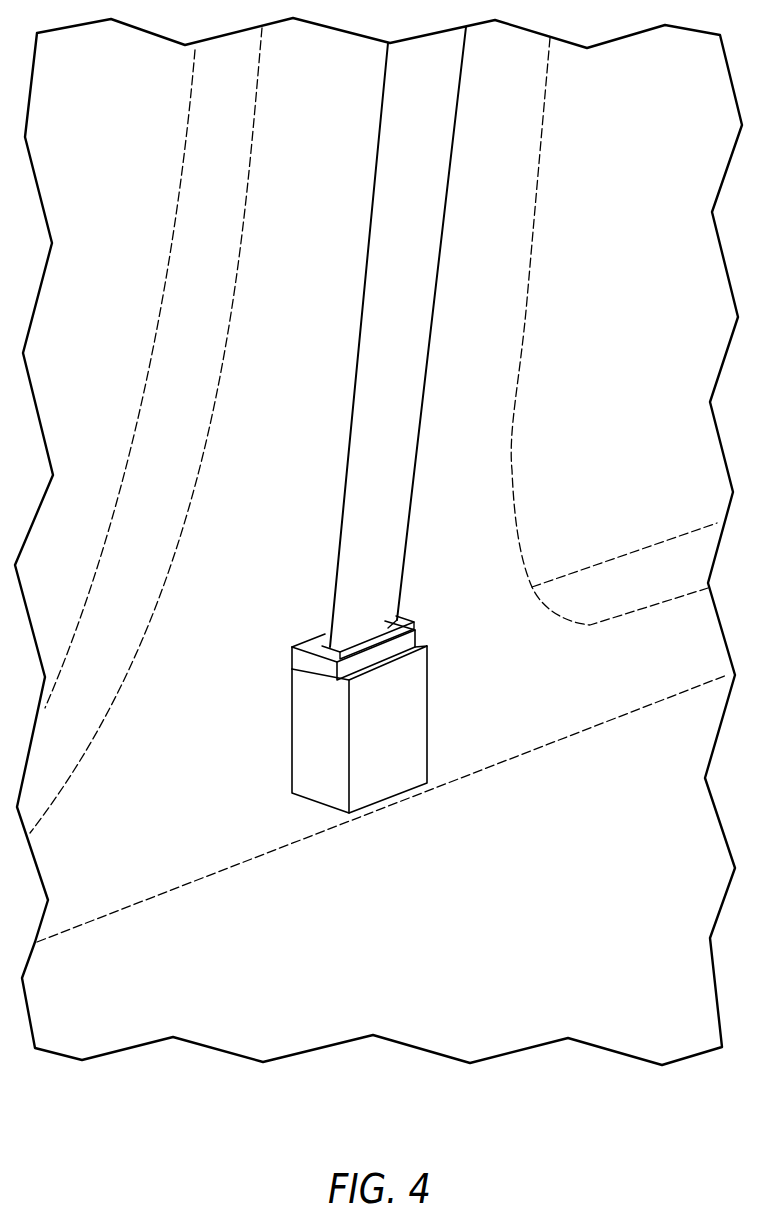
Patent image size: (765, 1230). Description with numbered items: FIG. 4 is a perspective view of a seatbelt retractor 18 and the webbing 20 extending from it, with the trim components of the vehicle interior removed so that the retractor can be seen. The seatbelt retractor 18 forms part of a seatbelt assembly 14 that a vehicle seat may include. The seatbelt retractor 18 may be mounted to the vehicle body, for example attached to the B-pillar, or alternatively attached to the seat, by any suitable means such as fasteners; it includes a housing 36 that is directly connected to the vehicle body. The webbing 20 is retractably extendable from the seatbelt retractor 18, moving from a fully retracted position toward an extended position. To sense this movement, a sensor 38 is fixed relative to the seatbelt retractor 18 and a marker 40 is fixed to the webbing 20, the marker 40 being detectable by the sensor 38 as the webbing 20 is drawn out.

The seatbelt assembly 14 is at (296, 604).
The seatbelt retractor 18 is at (262, 745).
The webbing 20 is at (389, 251).
The housing 36 is at (430, 693).
The sensor 38 is at (313, 663).
The marker 40 is at (390, 613).